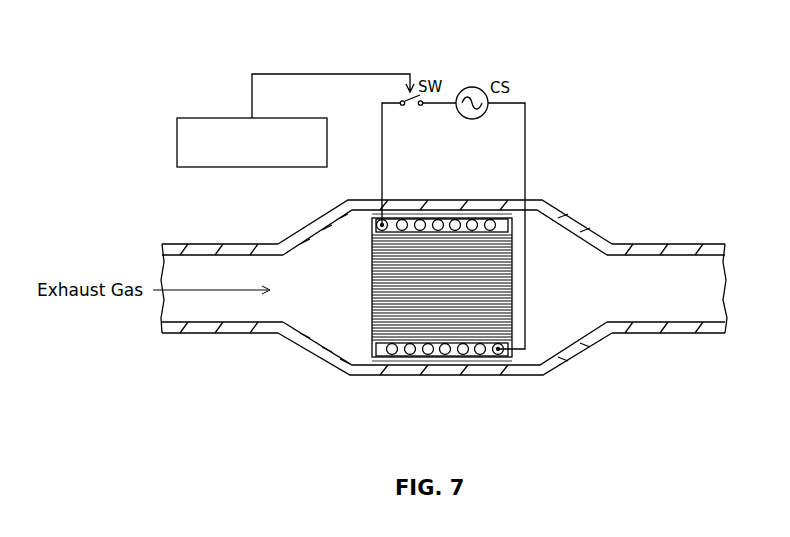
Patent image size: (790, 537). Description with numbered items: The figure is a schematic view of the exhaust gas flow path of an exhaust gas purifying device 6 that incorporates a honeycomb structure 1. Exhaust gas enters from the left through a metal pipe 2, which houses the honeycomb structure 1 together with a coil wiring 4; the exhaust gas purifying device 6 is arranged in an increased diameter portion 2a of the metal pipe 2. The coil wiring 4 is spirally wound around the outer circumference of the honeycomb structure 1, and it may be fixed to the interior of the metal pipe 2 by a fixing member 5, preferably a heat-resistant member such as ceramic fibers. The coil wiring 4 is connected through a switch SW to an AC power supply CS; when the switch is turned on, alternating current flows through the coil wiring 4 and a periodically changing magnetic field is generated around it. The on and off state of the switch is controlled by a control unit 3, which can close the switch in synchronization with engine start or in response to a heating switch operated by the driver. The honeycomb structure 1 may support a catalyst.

The honeycomb structure 1 is at (373, 301).
The metal pipe 2 is at (248, 243).
The increased diameter portion 2a is at (372, 204).
The control unit 3 is at (178, 118).
The coil wiring 4 is at (390, 218).
The fixing member 5 is at (504, 210).
The exhaust gas purifying device 6 is at (355, 263).